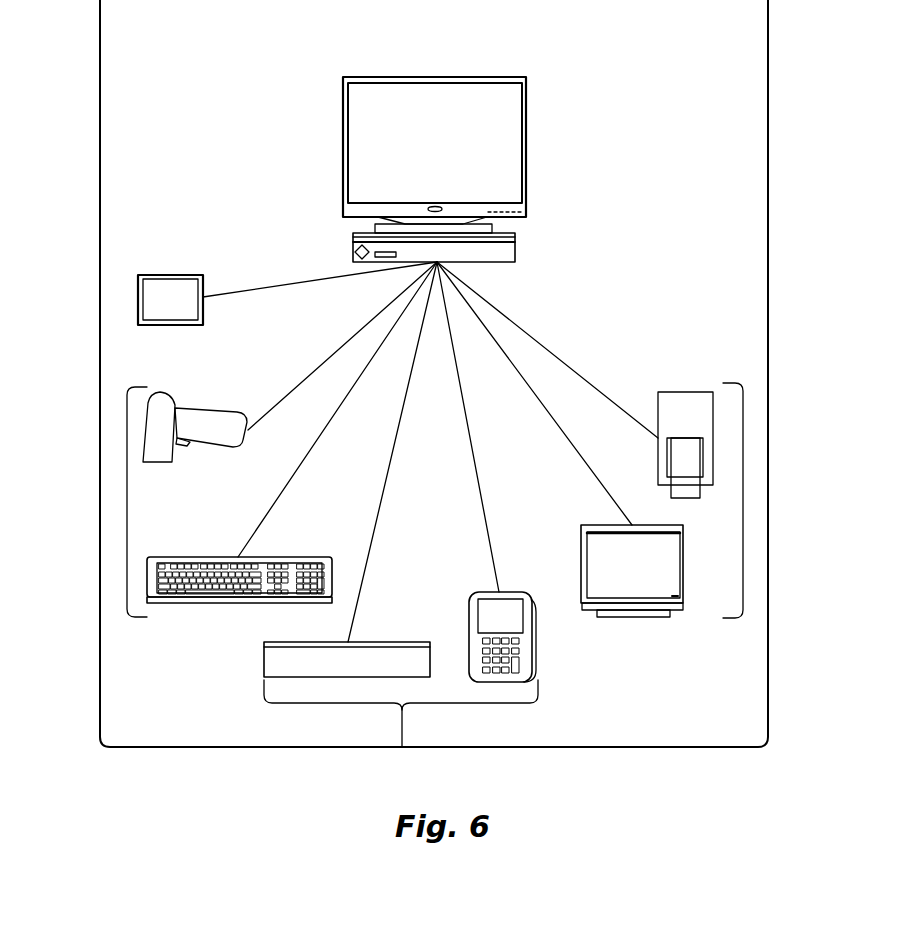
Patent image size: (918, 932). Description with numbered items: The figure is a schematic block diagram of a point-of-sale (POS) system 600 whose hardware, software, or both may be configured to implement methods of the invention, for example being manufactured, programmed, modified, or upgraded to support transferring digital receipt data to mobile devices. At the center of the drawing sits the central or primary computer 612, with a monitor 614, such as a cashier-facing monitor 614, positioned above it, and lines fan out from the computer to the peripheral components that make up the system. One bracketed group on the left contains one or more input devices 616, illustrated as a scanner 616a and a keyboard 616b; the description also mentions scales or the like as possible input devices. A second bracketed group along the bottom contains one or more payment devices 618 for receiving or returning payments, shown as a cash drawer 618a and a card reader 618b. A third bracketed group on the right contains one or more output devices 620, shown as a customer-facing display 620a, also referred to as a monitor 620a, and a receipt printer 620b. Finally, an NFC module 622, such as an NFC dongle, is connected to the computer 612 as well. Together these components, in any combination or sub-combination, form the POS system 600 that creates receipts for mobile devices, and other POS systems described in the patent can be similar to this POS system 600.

The point-of-sale (POS) system 600 is at (582, 37).
The central or primary computer 612 is at (536, 230).
The monitor 614 is at (333, 154).
The input devices 616 is at (127, 502).
The scanner 616a is at (163, 393).
The keyboard 616b is at (162, 557).
The payment devices 618 is at (402, 747).
The cash drawer 618a is at (264, 668).
The card reader 618b is at (536, 628).
The output devices 620 is at (743, 500).
The customer-facing display 620a is at (602, 525).
The receipt printer 620b is at (671, 392).
The NFC module 622 is at (163, 275).